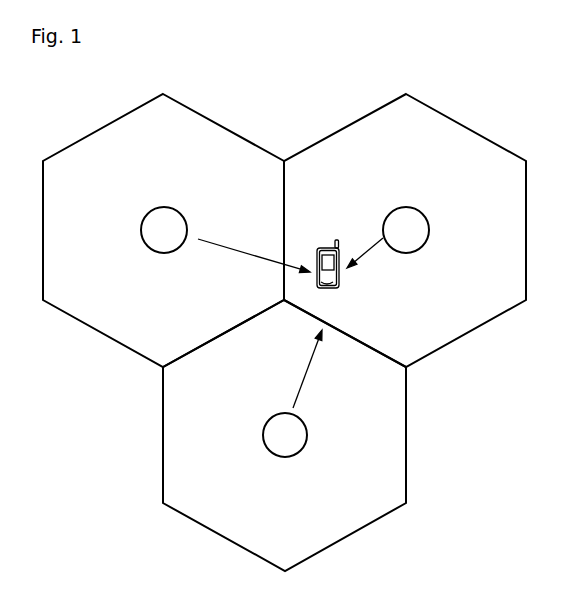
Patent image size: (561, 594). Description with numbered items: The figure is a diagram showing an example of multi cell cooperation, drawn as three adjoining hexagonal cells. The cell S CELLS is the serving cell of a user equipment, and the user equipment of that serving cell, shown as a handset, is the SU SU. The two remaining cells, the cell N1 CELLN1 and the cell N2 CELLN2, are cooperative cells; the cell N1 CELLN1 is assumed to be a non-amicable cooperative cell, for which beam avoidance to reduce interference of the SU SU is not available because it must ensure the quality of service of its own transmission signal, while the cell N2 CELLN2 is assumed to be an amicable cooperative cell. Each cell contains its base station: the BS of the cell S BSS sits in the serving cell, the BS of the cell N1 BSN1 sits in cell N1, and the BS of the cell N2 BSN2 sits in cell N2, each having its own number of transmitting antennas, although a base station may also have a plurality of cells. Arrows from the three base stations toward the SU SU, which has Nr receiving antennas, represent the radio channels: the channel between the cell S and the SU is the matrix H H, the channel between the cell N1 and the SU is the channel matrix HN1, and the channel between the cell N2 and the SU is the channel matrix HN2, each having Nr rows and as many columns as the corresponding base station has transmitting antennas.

The cell N1 CELLN1 is at (163, 230).
The cell S CELLS is at (405, 230).
The cell N2 CELLN2 is at (284, 435).
The BS of the cell N1 BSN1 is at (164, 230).
The BS of the cell S BSS is at (406, 230).
The BS of the cell N2 BSN2 is at (285, 435).
The UE of the serving cell SU is at (329, 279).
The channel between the cell N1 and the SU HN1 is at (254, 252).
The channel between the cell S and the SU H is at (365, 250).
The channel between the cell N2 and the SU HN2 is at (314, 369).